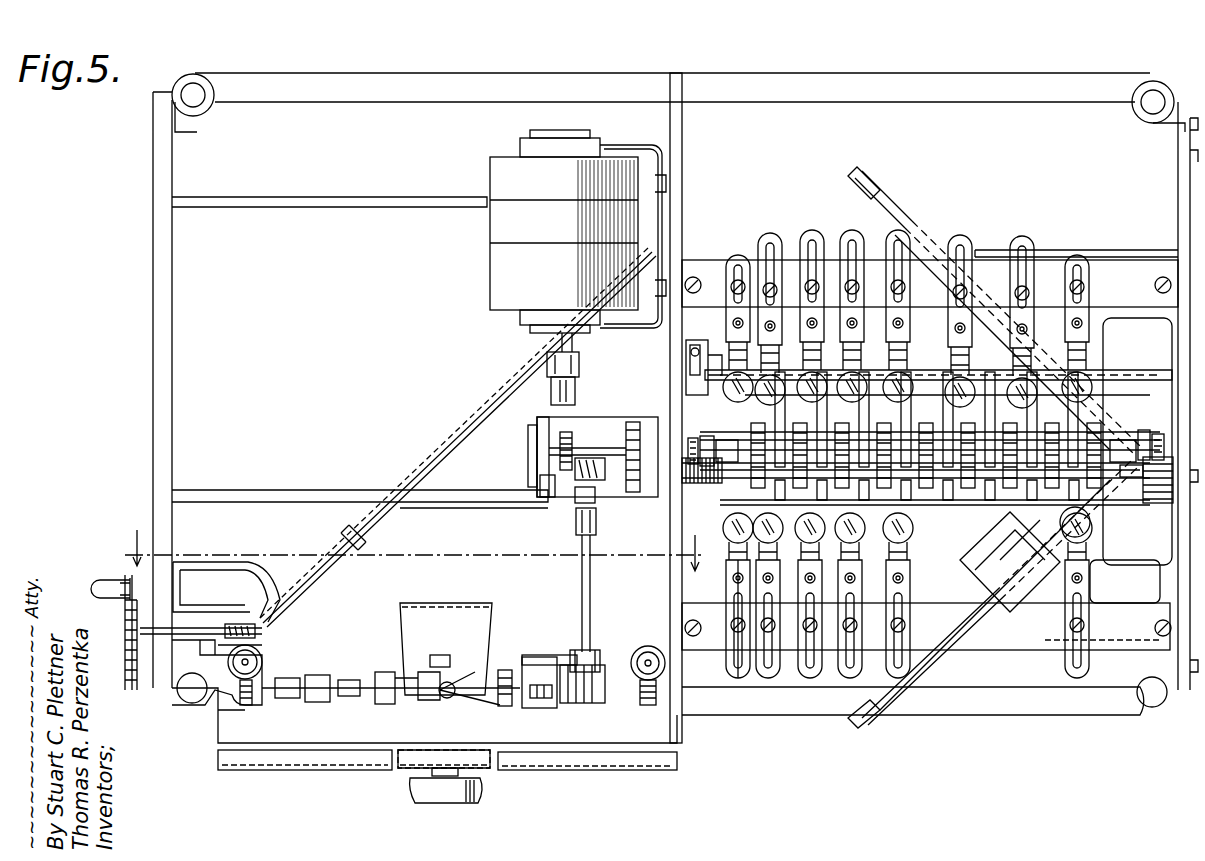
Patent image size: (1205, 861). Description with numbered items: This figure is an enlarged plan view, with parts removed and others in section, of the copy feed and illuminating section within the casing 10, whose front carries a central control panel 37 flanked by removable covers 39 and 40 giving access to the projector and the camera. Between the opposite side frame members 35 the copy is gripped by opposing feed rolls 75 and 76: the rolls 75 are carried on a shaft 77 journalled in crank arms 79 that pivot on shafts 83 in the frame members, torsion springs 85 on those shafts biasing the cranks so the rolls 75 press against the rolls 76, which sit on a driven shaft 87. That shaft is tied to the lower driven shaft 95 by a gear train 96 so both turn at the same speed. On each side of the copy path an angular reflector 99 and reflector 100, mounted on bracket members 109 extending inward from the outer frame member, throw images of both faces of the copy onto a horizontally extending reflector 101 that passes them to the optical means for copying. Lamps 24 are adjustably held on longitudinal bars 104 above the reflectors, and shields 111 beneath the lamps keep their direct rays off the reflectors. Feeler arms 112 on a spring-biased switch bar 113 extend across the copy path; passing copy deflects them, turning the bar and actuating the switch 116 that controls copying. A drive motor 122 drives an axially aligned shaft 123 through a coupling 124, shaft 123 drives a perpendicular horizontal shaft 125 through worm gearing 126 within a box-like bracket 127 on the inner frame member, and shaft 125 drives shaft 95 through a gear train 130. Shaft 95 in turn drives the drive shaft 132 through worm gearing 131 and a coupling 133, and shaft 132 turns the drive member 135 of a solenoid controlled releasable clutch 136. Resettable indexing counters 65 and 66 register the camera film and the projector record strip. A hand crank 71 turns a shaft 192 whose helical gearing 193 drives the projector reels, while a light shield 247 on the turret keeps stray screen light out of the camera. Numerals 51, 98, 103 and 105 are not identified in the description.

The casing 10 is at (417, 550).
The lamps 24 is at (860, 360).
The side frame members 35 is at (697, 184).
The central control panel 37 is at (488, 772).
The removable end plates or covers 39 is at (322, 770).
The removable end plates or covers 40 is at (612, 772).
The cup 51 is at (432, 806).
The resettable indexing counter 65 is at (540, 708).
The resettable indexing counter 66 is at (340, 703).
The hand crank 71 is at (125, 597).
The feed rolls 75 is at (845, 430).
The feed rolls 76 is at (810, 485).
The shaft 77 is at (785, 440).
The crank arms 79 is at (1150, 400).
The shafts 83 is at (726, 440).
The torsion springs 85 is at (694, 436).
The driven shaft 87 is at (740, 482).
The driven shaft 95 is at (617, 478).
The gear train 96 is at (1158, 505).
The gearbox housing 98 is at (535, 458).
The reflector 99 is at (930, 265).
The reflector 100 is at (960, 640).
The reflector 101 is at (452, 443).
The lower fingers 103 is at (808, 672).
The longitudinally extending bars 104 is at (715, 265).
The lower finger 105 is at (748, 640).
The bracket members 109 is at (1048, 262).
The shields 111 is at (820, 690).
The feeler arms 112 is at (1028, 410).
The switch bar 113 is at (920, 300).
The switch 116 is at (697, 340).
The drive motor 122 is at (492, 273).
The shaft 123 is at (580, 398).
The coupling 124 is at (574, 345).
The horizontal shaft 125 is at (595, 440).
The worm gearing 126 is at (560, 432).
The box like bracket 127 is at (543, 490).
The gear train 130 is at (633, 492).
The worm gearing 131 is at (578, 495).
The drive shaft 132 is at (580, 611).
The coupling 133 is at (575, 528).
The drive member 135 is at (600, 652).
The solenoid controlled releasable clutch 136 is at (632, 655).
The shaft 192 is at (205, 618).
The helical gearing 193 is at (255, 650).
The light shield 247 is at (432, 617).